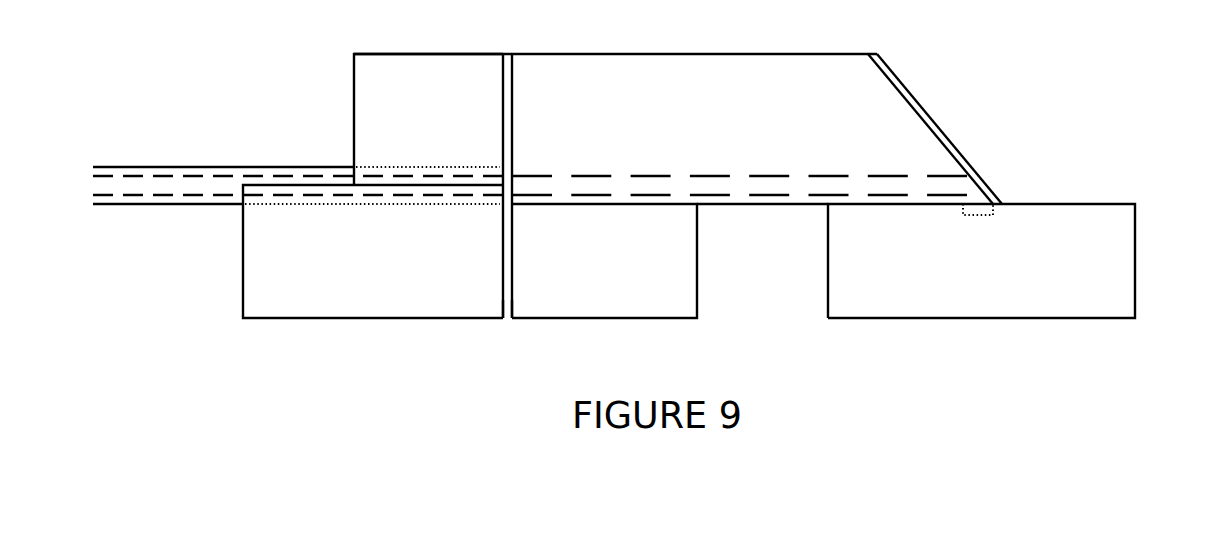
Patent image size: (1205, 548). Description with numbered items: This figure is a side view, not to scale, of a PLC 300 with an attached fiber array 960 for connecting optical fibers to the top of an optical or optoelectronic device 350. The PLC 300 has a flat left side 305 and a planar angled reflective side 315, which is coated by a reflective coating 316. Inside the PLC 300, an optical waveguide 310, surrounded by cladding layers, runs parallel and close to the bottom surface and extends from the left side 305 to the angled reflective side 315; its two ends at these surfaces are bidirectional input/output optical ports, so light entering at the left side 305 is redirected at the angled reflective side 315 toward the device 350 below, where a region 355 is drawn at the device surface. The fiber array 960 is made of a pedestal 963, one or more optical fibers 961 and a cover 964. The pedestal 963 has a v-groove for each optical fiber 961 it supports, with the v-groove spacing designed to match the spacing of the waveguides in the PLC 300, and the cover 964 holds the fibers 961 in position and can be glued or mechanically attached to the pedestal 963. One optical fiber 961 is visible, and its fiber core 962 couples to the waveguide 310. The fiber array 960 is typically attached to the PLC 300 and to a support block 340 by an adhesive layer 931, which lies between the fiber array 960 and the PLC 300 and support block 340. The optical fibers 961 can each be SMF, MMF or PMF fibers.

The PLC 300 is at (580, 98).
The left side 305 is at (513, 153).
The optical waveguide 310 is at (630, 187).
The planar angled reflective side 315 is at (920, 120).
The reflective coating 316 is at (915, 93).
The support block 340 is at (580, 304).
The optical or optoelectronic device 350 is at (1090, 302).
The contact region 355 is at (995, 213).
The adhesive layer 931 is at (507, 312).
The fiber array 960 is at (272, 112).
The optical fiber 961 is at (237, 167).
The fiber core 962 is at (227, 195).
The pedestal 963 is at (455, 289).
The cover 964 is at (423, 98).